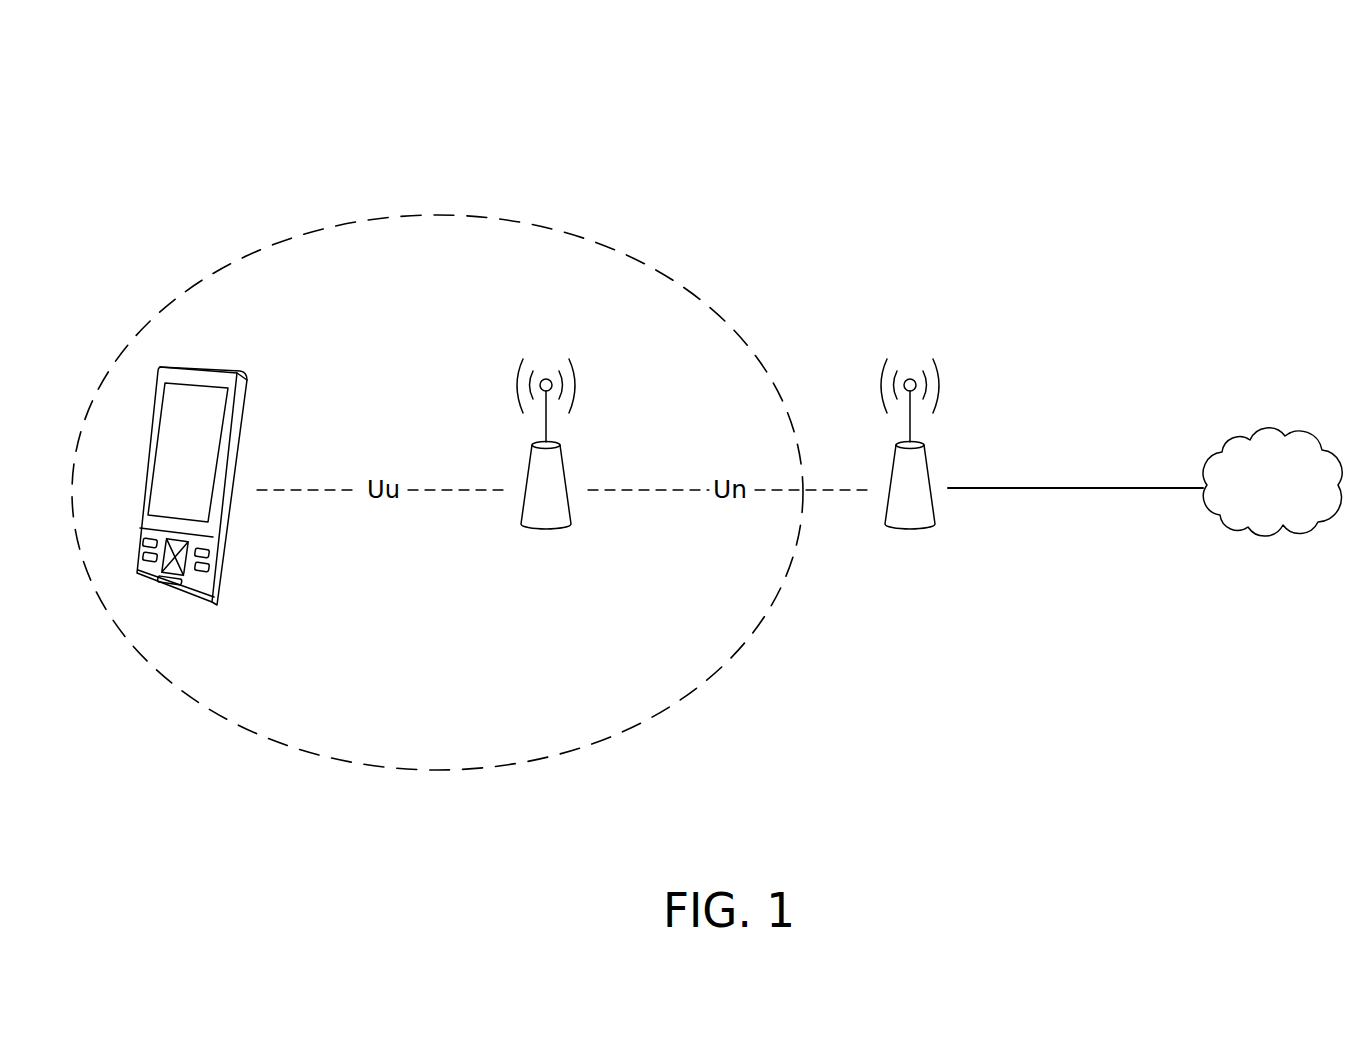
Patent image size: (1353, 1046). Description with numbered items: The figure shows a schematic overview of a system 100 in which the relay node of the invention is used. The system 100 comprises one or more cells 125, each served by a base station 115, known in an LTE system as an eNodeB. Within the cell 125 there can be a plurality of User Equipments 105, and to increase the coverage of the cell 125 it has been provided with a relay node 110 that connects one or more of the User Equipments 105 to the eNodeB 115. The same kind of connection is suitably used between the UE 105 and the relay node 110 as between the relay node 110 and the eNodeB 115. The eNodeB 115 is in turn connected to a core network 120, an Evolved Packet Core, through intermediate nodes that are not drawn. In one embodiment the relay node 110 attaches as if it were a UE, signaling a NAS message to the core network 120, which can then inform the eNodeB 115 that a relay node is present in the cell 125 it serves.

The system 100 is at (1208, 132).
The User Equipment 105 is at (253, 377).
The relay node 110 is at (592, 443).
The base station 115 is at (952, 445).
The core network 120 is at (1233, 445).
The cell 125 is at (222, 718).